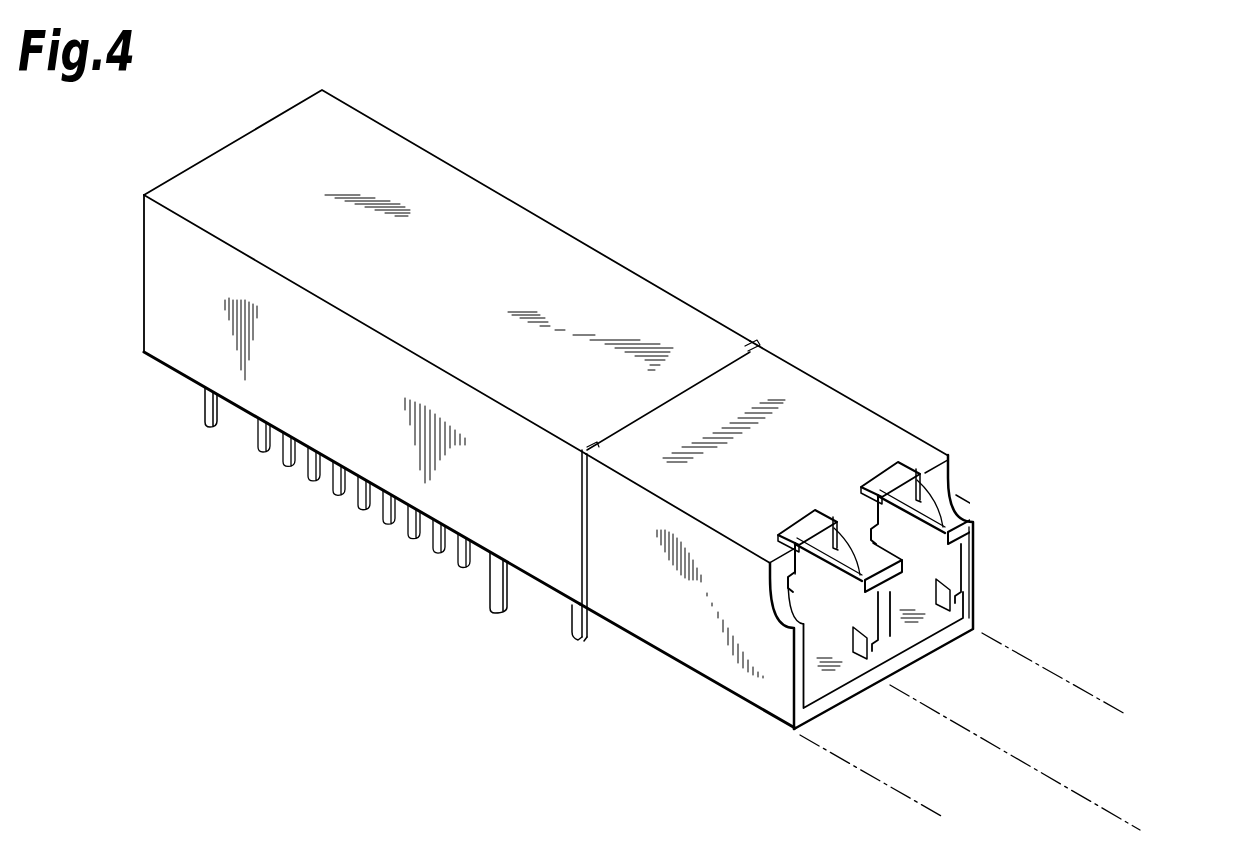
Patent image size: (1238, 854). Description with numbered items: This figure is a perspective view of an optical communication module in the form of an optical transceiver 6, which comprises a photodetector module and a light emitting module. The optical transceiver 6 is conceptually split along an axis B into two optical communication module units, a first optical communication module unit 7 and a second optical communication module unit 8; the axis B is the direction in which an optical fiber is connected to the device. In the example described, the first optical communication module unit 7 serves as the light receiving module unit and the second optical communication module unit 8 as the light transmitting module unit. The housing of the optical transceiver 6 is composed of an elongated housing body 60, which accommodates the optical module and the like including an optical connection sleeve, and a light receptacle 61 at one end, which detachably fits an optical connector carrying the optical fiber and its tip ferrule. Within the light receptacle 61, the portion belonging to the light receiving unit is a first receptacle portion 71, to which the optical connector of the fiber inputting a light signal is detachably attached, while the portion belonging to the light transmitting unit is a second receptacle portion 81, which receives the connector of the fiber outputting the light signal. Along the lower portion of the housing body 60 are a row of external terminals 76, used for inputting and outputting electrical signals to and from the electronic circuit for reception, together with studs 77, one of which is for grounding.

The optical transceiver 6 is at (722, 285).
The housing body 60 is at (532, 243).
The light receptacle 61 is at (865, 428).
The first receptacle portion 71 is at (835, 678).
The second receptacle portion 81 is at (915, 635).
The external terminals 76 is at (480, 575).
The studs 77 is at (207, 427).
The first optical communication module unit 7 is at (1043, 775).
The second optical communication module unit 8 is at (1135, 720).
The axis B is at (1107, 808).